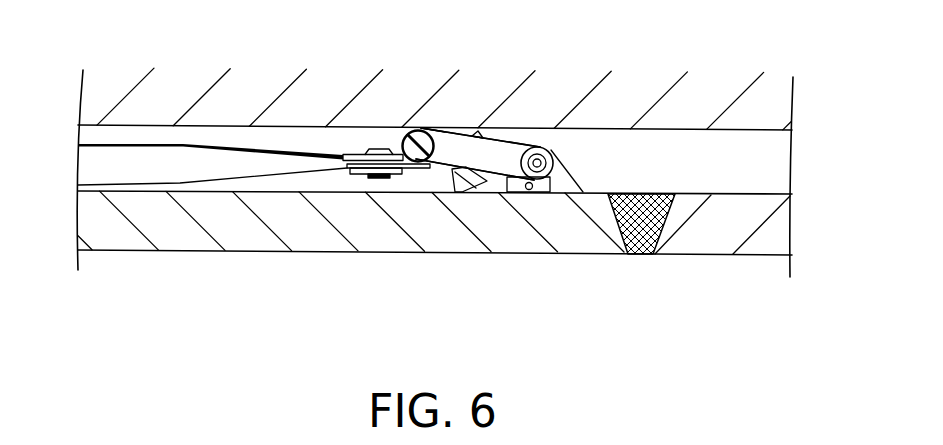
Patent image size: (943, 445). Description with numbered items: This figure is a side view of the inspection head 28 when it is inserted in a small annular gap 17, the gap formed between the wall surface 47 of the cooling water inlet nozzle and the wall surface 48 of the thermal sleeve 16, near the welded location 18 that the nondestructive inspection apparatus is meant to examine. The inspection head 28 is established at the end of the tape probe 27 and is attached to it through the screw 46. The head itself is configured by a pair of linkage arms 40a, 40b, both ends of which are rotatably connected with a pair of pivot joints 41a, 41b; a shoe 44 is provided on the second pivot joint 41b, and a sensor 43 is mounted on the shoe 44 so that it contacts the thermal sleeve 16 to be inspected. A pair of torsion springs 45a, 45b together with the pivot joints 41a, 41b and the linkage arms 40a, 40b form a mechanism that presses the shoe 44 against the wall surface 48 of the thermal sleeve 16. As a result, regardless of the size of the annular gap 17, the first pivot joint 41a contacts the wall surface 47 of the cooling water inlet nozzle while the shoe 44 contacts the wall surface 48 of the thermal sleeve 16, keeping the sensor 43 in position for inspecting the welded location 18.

The thermal sleeve 16 is at (238, 233).
The annular gap 17 is at (760, 166).
The welded location 18 is at (641, 256).
The tape probe 27 is at (90, 159).
The inspection head 28 is at (595, 161).
The linkage arm 40a is at (492, 153).
The linkage arm 40b is at (478, 154).
The first pivot joint 41a is at (433, 130).
The second pivot joint 41b is at (553, 150).
The sensor 43 is at (457, 180).
The shoe 44 is at (563, 185).
The torsion spring 45a is at (355, 148).
The torsion spring 45b is at (388, 171).
The screw 46 is at (378, 148).
The wall surface of the cooling water inlet nozzle 47 is at (231, 127).
The wall surface of the thermal sleeve 48 is at (720, 193).